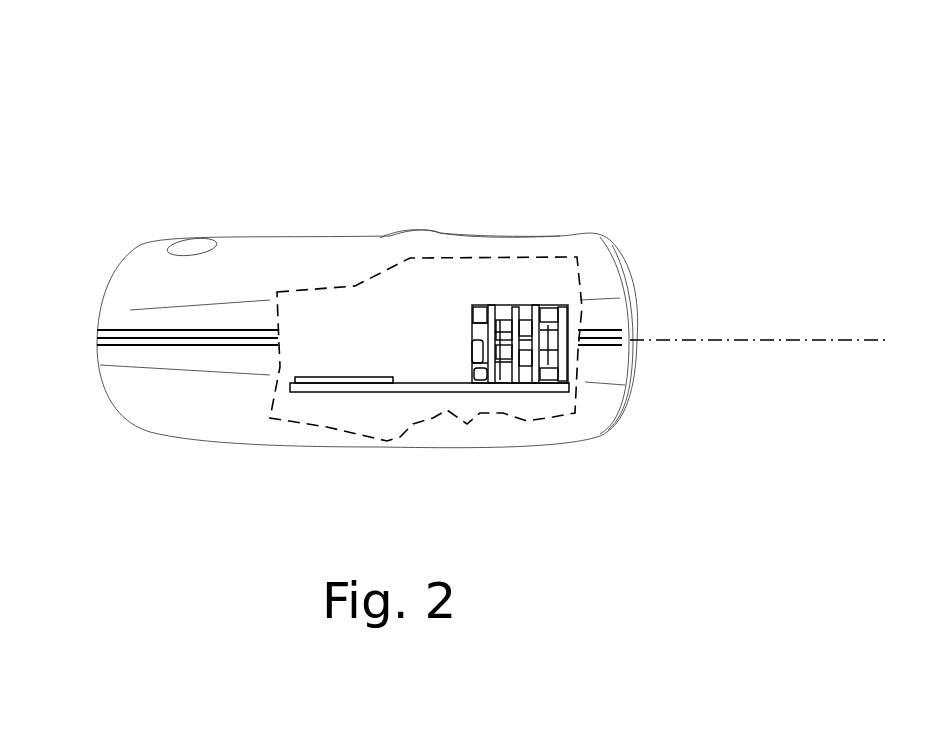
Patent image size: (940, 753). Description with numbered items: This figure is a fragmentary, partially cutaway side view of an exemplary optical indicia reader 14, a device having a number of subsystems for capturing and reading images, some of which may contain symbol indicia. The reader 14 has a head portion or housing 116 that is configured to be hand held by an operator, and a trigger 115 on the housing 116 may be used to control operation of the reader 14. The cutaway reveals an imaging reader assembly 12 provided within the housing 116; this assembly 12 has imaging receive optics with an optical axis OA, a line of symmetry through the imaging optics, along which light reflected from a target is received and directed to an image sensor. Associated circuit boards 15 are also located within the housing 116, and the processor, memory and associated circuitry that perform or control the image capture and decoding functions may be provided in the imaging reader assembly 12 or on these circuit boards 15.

The optical indicia reader 14 is at (257, 63).
The housing 116 is at (131, 276).
The trigger 115 is at (440, 237).
The imaging reader assembly 12 is at (460, 331).
The circuit boards 15 is at (357, 378).
The optical axis OA is at (851, 341).